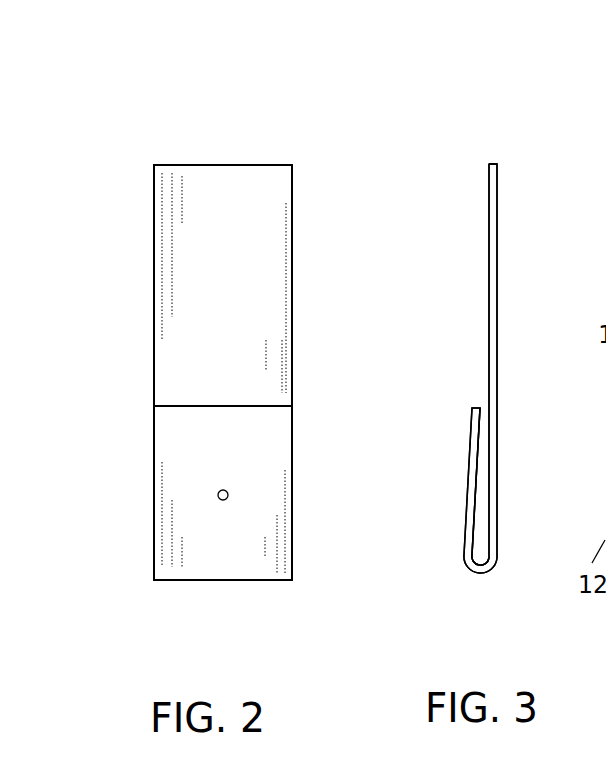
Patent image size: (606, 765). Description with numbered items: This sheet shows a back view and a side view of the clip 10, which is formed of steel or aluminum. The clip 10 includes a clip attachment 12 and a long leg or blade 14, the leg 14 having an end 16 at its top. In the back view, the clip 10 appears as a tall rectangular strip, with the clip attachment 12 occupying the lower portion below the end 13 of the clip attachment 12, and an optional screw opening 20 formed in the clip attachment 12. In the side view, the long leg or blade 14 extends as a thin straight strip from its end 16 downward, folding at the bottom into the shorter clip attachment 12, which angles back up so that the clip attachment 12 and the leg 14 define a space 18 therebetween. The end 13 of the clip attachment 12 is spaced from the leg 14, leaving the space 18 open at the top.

In FIG. 2, the clip 10 is at (266, 137).
In FIG. 3, the clip 10 is at (526, 170).
In FIG. 2, the clip attachment 12 is at (274, 469).
In FIG. 3, the clip attachment 12 is at (452, 468).
In FIG. 2, the end of clip attachment 13 is at (178, 406).
In FIG. 2, the long leg or blade 14 is at (188, 258).
In FIG. 3, the long leg or blade 14 is at (505, 265).
In FIG. 2, the end 16 is at (170, 165).
In FIG. 3, the end 16 is at (494, 162).
In FIG. 3, the space 18 is at (482, 527).
In FIG. 2, the screw opening 20 is at (218, 492).